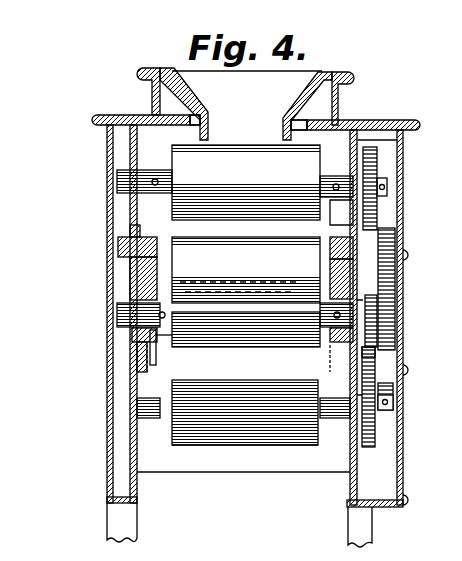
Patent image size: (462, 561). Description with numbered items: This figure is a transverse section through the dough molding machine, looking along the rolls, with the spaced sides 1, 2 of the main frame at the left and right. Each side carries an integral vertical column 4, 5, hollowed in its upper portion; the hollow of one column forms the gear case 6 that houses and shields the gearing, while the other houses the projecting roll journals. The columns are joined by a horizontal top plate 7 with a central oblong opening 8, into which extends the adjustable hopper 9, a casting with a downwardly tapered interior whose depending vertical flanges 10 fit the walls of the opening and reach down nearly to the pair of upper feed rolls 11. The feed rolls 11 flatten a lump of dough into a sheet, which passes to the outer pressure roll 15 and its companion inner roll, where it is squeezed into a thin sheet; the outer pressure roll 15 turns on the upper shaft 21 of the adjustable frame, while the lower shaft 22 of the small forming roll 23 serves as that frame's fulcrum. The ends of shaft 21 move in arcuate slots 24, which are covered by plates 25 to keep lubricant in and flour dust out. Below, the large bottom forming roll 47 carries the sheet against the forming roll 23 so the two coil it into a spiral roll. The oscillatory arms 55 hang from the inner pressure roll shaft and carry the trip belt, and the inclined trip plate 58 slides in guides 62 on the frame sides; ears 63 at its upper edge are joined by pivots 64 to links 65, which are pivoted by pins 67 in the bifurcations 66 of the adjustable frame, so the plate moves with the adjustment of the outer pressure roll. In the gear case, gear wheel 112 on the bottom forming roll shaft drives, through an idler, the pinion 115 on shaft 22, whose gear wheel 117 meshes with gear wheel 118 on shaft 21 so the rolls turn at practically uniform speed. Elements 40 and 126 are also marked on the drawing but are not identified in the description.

The side 1 is at (107, 526).
The side 2 is at (372, 527).
The vertical column 4 is at (107, 202).
The vertical column 5 is at (404, 220).
The gear case 6 is at (400, 160).
The top portion or plate 7 is at (134, 116).
The central oblong opening 8 is at (197, 122).
The hopper 9 is at (158, 68).
The depending vertical flanges 10 is at (300, 140).
The feed rolls 11 is at (172, 164).
The outer pressure roll 15 is at (246, 270).
The shaft of outer pressure roll 21 is at (336, 216).
The shaft of forming roll 22 is at (113, 312).
The forming roll 23 is at (232, 330).
The arcuate slots 24 is at (118, 243).
The plates 25 is at (140, 236).
The blade 40 is at (240, 291).
The bottom forming roll 47 is at (254, 445).
The oscillatory arms 55 is at (130, 280).
The trip plate 58 is at (245, 405).
The guides 62 is at (150, 418).
The ears 63 is at (170, 366).
The pivots 64 is at (137, 350).
The links 65 is at (140, 368).
The slots or bifurcations 66 is at (158, 345).
The pins 67 is at (132, 334).
The gear wheel 112 is at (394, 420).
The pinion 115 is at (397, 340).
The gear wheel 117 is at (397, 305).
The gear wheel 118 is at (396, 250).
The gear 126 is at (378, 200).